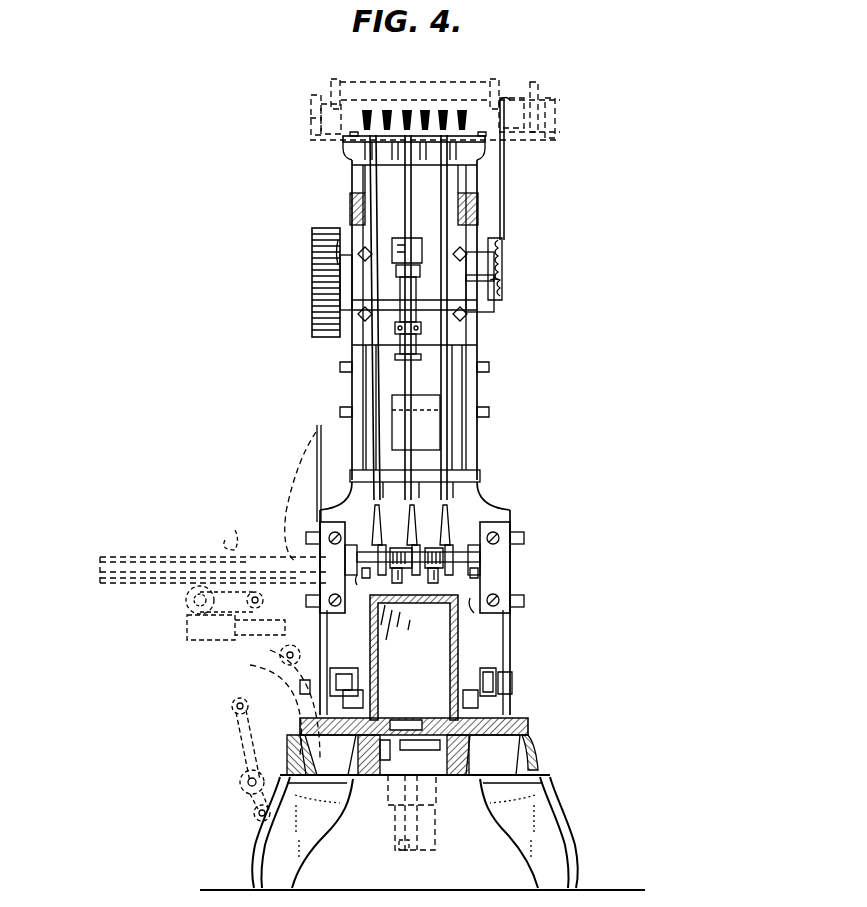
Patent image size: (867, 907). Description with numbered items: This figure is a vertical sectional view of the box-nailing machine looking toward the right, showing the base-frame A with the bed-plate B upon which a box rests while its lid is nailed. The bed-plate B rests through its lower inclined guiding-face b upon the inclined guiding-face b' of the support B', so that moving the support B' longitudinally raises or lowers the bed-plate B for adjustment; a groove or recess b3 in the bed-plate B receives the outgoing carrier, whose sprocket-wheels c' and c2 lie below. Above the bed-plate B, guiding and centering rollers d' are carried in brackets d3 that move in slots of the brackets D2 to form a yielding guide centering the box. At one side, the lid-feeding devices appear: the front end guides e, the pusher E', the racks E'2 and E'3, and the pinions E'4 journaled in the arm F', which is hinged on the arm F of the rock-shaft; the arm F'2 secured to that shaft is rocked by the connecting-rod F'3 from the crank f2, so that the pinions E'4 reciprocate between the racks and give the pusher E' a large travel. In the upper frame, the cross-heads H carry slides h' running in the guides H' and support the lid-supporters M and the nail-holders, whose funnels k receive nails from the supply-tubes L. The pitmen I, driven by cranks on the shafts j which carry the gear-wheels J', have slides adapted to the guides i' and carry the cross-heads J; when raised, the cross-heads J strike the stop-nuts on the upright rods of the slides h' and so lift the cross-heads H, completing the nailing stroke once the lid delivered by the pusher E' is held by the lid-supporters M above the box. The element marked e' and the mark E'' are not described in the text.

The base-frame A is at (526, 732).
The bed-plate B is at (403, 772).
The support for the bed-plate B' is at (395, 776).
The lower inclined guiding-face b is at (447, 743).
The inclined guiding-face b' is at (389, 747).
The groove or recess b3 is at (424, 747).
The sprocket-wheels c' is at (418, 798).
The sprocket-wheels c2 is at (396, 835).
The brackets D2 is at (345, 690).
The guiding and centering rollers d' is at (412, 677).
The brackets d3 is at (350, 712).
The front end guides e is at (266, 491).
The link extension e' is at (274, 479).
The pusher E' is at (215, 564).
The slide bar E'' is at (148, 555).
The racks E'2 is at (171, 600).
The racks E'3 is at (193, 629).
The pinions E'4 is at (206, 604).
The arm F is at (250, 660).
The arm F' is at (227, 633).
The arm F'2 is at (276, 705).
The connecting-rod F'3 is at (234, 752).
The crank f2 is at (250, 812).
The cross-heads H is at (418, 568).
The guides H' is at (411, 567).
The slides h' is at (415, 606).
The pitmen I is at (425, 345).
The guides i' is at (405, 242).
The cross-heads J is at (418, 481).
The gear-wheels J' is at (314, 282).
The shafts j is at (338, 240).
The nail-funnels k is at (380, 512).
The supply-tubes L is at (375, 154).
The lid-supporters M is at (420, 580).